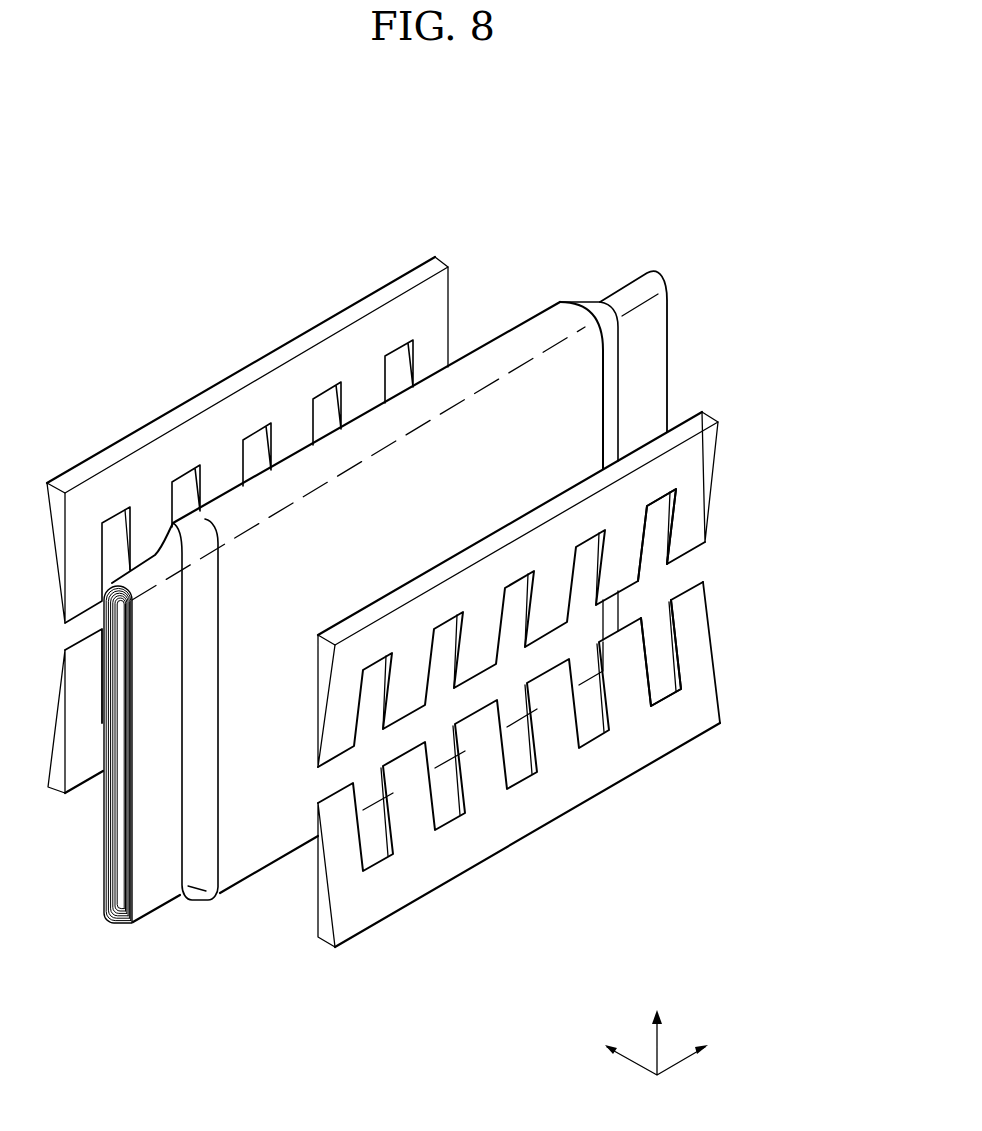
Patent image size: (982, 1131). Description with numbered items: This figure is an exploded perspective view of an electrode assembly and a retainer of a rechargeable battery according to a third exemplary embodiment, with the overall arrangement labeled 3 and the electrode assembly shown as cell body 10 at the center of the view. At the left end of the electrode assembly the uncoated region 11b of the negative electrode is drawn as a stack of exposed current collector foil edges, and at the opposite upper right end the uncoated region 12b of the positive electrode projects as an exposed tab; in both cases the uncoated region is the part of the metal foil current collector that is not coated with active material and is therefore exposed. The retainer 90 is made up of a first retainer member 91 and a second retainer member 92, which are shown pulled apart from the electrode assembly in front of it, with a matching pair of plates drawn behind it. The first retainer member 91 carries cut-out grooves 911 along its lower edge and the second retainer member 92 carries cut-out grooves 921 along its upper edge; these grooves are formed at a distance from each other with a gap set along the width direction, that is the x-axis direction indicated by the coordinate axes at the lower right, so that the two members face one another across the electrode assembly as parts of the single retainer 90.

The battery module 3 is at (408, 165).
The battery cell 10 is at (543, 298).
The uncoated region 11b is at (152, 888).
The uncoated region 12b is at (648, 347).
The retainer 90 is at (764, 861).
The first retainer member 91 is at (703, 457).
The cut-out grooves 911 is at (673, 540).
The second retainer member 92 is at (703, 695).
The cut-out grooves 921 is at (673, 662).